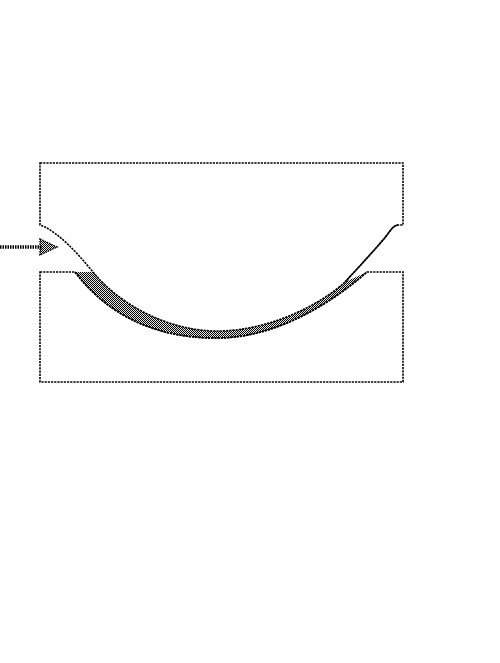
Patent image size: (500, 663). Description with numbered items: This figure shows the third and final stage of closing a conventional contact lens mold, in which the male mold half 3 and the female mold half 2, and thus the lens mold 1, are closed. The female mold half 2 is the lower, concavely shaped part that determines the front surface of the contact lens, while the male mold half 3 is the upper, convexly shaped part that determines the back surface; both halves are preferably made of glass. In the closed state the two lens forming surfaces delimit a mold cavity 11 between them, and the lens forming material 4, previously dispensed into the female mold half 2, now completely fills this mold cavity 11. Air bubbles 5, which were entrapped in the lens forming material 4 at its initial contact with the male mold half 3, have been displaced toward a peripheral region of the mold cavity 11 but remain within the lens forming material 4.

The lens mold 1 is at (430, 162).
The female mold half 2 is at (335, 362).
The male mold half 3 is at (255, 217).
The lens forming material 4 is at (92, 290).
The air bubbles 5 is at (122, 308).
The mold cavity 11 is at (340, 290).